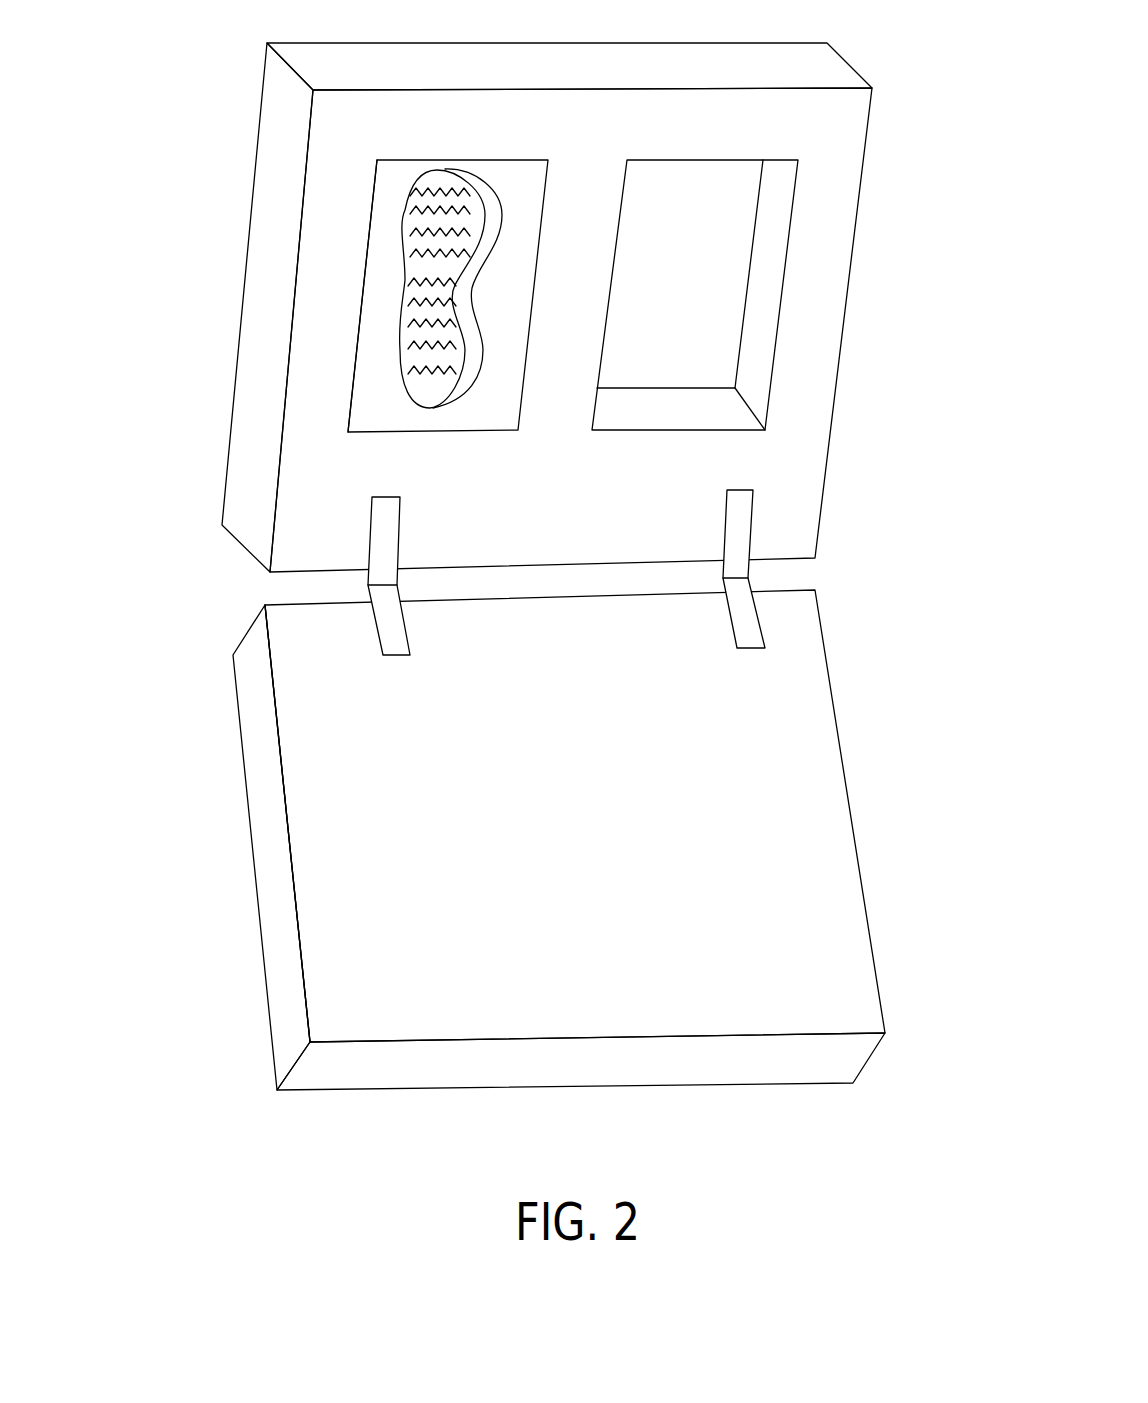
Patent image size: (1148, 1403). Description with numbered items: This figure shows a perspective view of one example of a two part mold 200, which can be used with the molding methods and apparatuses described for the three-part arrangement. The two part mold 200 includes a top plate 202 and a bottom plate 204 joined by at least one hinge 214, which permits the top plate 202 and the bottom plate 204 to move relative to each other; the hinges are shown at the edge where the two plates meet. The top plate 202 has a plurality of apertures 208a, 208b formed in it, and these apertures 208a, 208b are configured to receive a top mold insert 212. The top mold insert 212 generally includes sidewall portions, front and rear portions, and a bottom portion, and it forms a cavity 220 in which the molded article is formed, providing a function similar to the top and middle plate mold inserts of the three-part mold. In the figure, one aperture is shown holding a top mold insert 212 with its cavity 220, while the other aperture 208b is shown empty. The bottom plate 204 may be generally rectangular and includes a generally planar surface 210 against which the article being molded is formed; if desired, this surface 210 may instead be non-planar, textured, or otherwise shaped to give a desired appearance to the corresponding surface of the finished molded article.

The two part mold 200 is at (500, 575).
The top plate 202 is at (523, 286).
The bottom plate 204 is at (537, 870).
The aperture 208a is at (361, 296).
The aperture 208b is at (707, 273).
The planar surface 210 is at (323, 857).
The top mold insert 212 is at (377, 362).
The hinge 214 is at (383, 538).
The cavity 220 is at (420, 268).